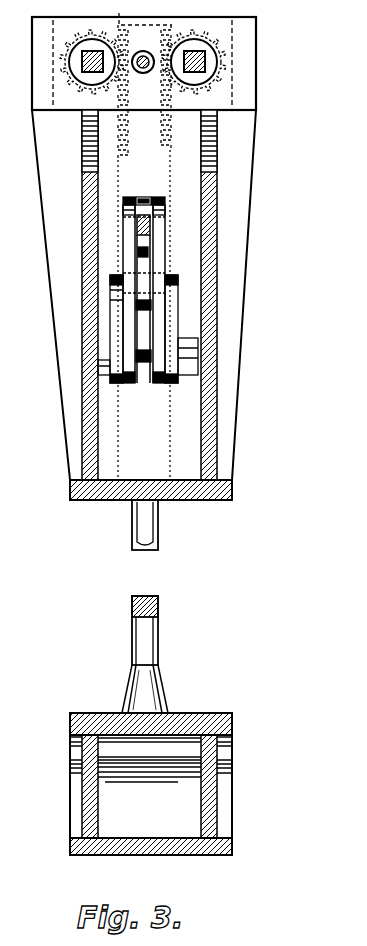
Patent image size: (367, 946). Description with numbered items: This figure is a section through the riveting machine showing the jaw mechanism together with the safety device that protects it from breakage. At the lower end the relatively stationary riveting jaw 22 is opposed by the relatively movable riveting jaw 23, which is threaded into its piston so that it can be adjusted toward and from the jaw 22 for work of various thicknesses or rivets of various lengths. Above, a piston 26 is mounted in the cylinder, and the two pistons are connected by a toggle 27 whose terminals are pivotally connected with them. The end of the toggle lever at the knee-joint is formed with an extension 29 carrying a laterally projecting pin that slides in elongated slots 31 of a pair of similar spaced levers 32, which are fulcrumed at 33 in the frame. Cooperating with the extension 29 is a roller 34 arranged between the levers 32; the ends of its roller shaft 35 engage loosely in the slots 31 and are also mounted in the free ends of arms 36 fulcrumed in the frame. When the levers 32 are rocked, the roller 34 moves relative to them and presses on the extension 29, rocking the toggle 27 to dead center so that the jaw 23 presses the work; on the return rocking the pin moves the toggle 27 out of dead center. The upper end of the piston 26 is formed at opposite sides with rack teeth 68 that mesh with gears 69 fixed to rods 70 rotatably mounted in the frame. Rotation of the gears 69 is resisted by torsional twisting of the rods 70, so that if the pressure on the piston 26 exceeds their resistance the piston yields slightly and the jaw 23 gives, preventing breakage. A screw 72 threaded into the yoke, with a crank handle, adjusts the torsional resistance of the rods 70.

The stationary riveting jaw 22 is at (153, 622).
The movable riveting jaw 23 is at (147, 530).
The piston 26 is at (218, 152).
The toggle 27 is at (150, 327).
The extension 29 is at (148, 253).
The elongated slots 31 is at (143, 197).
The levers 32 is at (165, 210).
The fulcrum 33 is at (143, 378).
The roller 34 is at (178, 282).
The roller shaft 35 is at (110, 291).
The arms 36 is at (178, 321).
The rack teeth 68 is at (172, 25).
The gears 69 is at (206, 38).
The rods 70 is at (272, 63).
The screw 72 is at (143, 73).